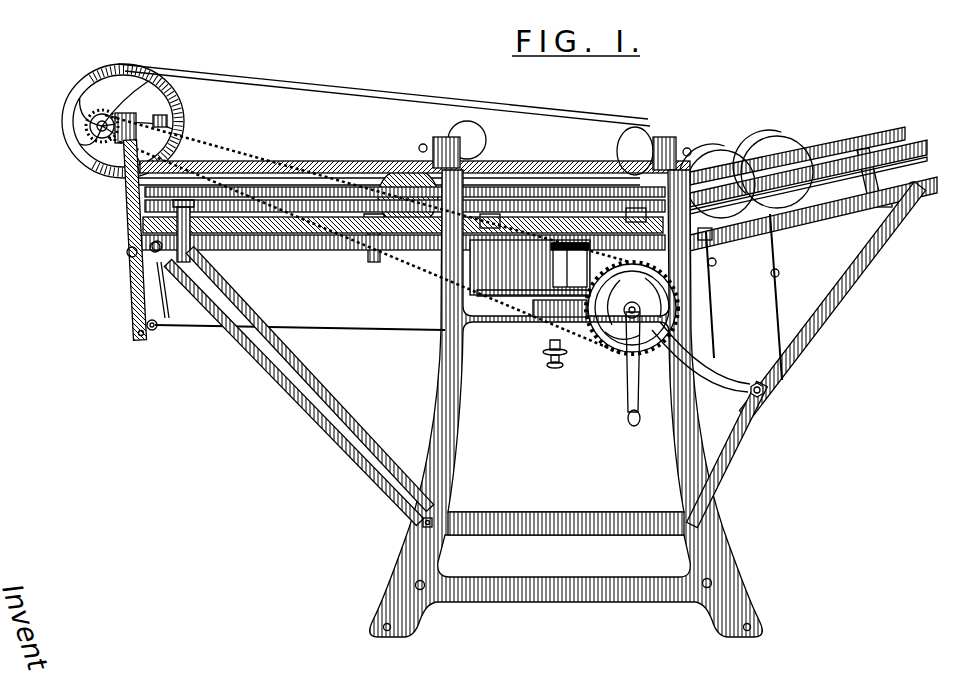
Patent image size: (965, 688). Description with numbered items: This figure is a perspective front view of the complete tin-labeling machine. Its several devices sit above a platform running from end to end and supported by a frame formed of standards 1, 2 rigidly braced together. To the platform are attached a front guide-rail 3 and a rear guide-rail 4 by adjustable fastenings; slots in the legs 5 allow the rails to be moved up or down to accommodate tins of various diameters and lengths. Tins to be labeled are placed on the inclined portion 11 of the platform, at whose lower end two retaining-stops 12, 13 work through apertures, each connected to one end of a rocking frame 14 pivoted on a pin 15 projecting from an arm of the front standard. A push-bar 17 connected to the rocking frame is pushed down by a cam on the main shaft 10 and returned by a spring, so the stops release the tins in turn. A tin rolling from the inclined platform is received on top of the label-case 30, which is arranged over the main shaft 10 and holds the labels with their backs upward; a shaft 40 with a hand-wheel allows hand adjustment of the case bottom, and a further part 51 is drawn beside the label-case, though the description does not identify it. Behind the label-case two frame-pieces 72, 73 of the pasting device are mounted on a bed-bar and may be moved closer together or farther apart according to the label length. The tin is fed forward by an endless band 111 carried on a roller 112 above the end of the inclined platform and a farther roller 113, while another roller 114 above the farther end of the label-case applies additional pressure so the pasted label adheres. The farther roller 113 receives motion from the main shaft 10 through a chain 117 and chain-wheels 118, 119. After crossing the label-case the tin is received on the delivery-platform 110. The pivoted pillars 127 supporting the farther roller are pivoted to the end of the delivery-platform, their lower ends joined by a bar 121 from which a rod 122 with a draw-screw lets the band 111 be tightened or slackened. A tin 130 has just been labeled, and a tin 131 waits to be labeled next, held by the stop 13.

The standard 1 is at (449, 388).
The standard 2 is at (536, 528).
The guide-rail 3 is at (317, 202).
The guide-rail 4 is at (267, 192).
The leg 5 is at (365, 251).
The main shaft 10 is at (623, 331).
The inclined portion of the platform 11 is at (840, 206).
The retaining-stop 12 is at (772, 241).
The retaining-stop 13 is at (717, 252).
The rocking frame 14 is at (752, 380).
The pin 15 is at (769, 406).
The push-bar 17 is at (684, 342).
The label-case 30 is at (530, 278).
The shaft 40 is at (546, 357).
The slide block 51 is at (557, 270).
The frame-piece 72 is at (626, 214).
The frame-piece 73 is at (500, 222).
The delivery-platform 110 is at (258, 249).
The endless band 111 is at (390, 90).
The roller 112 is at (618, 141).
The roller 113 is at (179, 118).
The roller 114 is at (485, 138).
The chain 117 is at (430, 270).
The chain-wheel 118 is at (674, 299).
The chain-wheel 119 is at (92, 128).
The bar 121 is at (153, 332).
The rod 122 is at (337, 329).
The pivoted pillar 127 is at (126, 211).
The tin 130 is at (405, 175).
The tin 131 is at (713, 168).